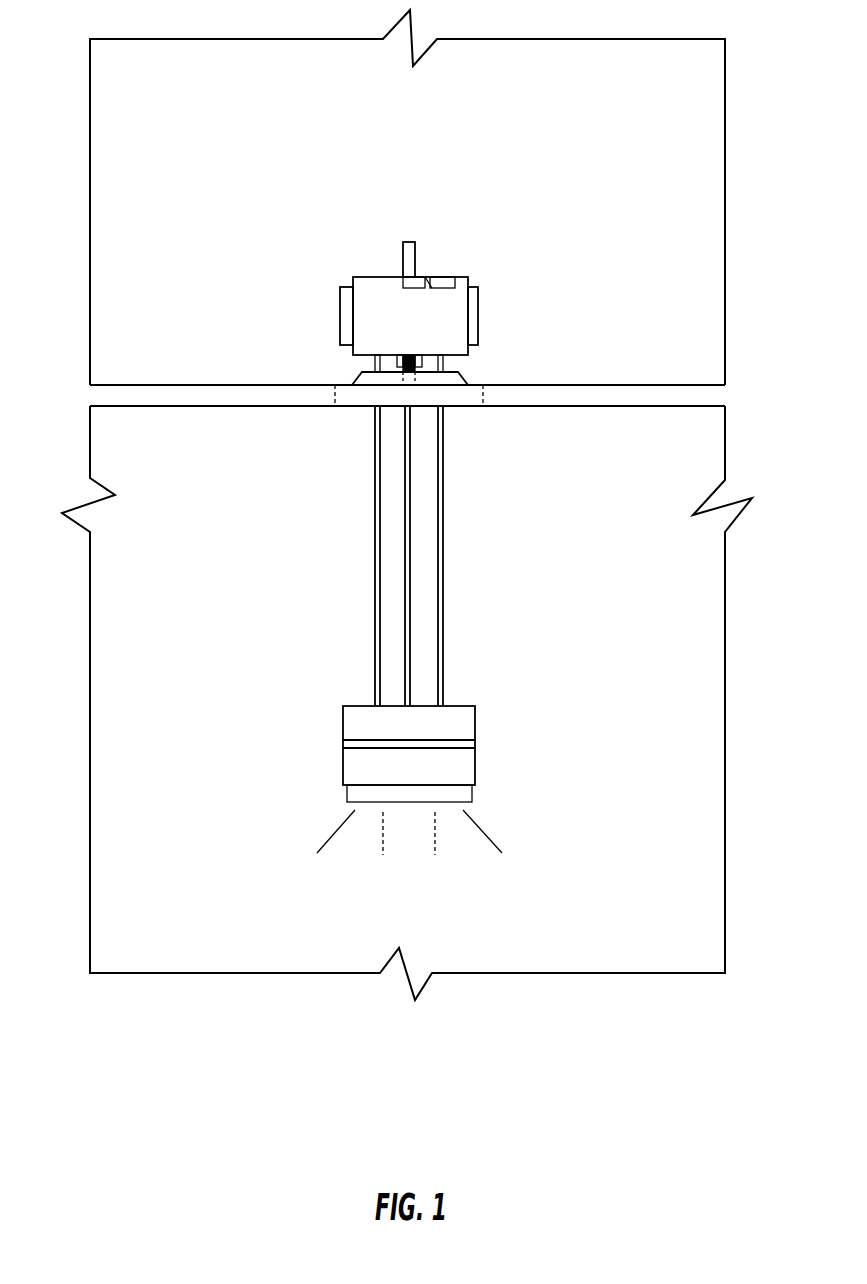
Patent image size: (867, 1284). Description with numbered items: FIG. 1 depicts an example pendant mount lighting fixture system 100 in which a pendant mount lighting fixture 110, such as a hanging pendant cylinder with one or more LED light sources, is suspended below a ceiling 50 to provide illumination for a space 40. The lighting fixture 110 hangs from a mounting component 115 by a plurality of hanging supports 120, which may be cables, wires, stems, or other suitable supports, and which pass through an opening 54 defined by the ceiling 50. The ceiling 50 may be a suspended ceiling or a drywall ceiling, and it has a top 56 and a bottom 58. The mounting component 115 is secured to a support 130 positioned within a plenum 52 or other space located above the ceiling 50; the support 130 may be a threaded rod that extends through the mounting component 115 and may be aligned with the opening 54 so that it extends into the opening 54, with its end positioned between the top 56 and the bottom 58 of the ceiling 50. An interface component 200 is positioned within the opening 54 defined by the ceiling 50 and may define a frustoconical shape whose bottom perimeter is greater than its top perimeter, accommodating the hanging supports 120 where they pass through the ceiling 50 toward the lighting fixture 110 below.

The space 40 is at (415, 910).
The ceiling 50 is at (411, 397).
The plenum 52 is at (415, 105).
The opening 54 is at (372, 406).
The top of the ceiling 56 is at (196, 385).
The bottom of the ceiling 58 is at (178, 406).
The pendant mount lighting fixture system 100 is at (145, 1015).
The pendant mount lighting fixture 110 is at (462, 705).
The mounting component 115 is at (463, 275).
The hanging supports 120 is at (375, 556).
The support 130 is at (409, 241).
The interface component 200 is at (452, 377).